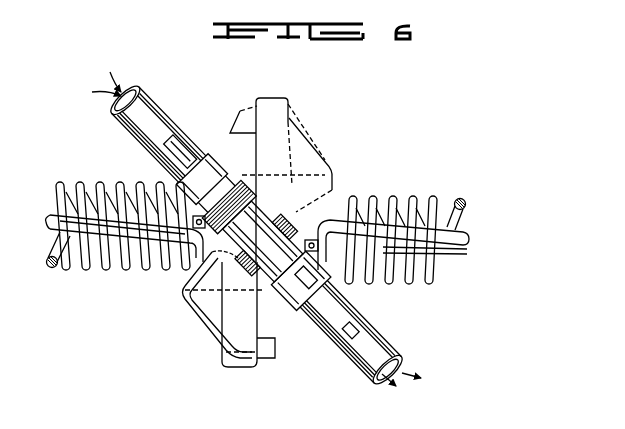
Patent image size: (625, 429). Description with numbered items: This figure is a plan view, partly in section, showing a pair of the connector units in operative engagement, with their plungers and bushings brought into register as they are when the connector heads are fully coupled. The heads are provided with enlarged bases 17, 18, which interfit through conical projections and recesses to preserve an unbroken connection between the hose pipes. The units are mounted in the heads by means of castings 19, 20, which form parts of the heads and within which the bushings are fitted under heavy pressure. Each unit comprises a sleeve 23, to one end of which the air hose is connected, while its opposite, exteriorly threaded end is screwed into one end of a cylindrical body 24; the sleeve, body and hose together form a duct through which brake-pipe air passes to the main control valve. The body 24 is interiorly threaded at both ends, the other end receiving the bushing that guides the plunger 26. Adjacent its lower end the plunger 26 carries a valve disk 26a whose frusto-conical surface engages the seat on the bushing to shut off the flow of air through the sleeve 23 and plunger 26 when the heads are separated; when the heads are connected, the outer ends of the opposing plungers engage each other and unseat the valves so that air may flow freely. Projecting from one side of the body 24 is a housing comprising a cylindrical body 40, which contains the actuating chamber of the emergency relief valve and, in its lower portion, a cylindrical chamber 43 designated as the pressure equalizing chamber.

The enlarged base 17 is at (303, 155).
The enlarged base 18 is at (201, 308).
The casting 19 is at (209, 240).
The casting 20 is at (304, 225).
The sleeve 23 is at (128, 124).
The cylindrical body 24 is at (292, 312).
The plunger 26 is at (251, 190).
The valve disk 26a is at (239, 270).
The cylindrical body of housing 40 is at (218, 166).
The pressure equalizing chamber 43 is at (185, 143).